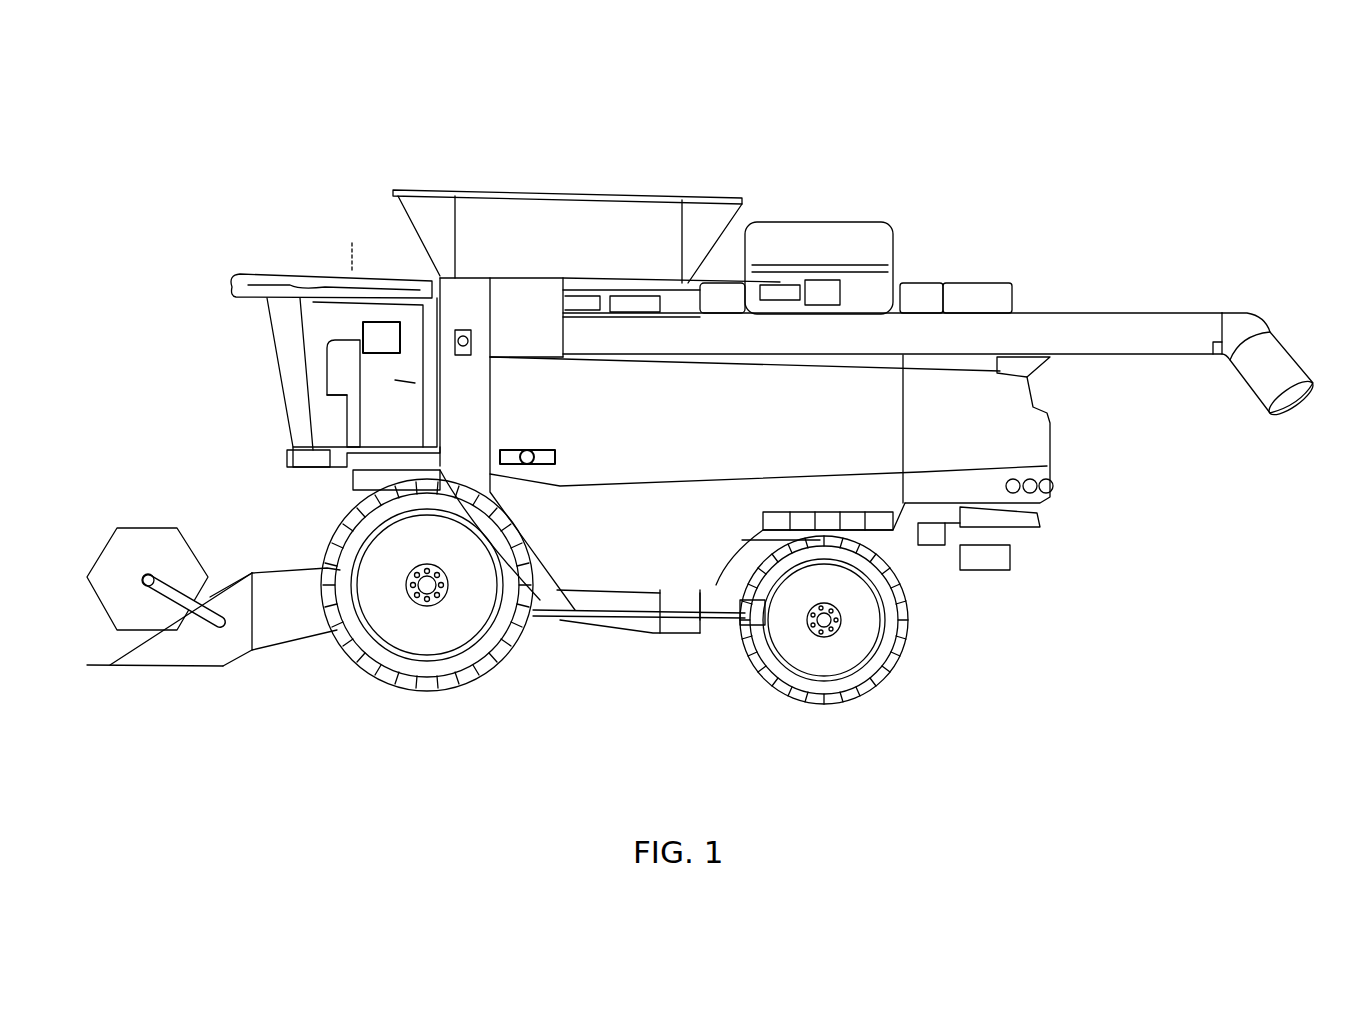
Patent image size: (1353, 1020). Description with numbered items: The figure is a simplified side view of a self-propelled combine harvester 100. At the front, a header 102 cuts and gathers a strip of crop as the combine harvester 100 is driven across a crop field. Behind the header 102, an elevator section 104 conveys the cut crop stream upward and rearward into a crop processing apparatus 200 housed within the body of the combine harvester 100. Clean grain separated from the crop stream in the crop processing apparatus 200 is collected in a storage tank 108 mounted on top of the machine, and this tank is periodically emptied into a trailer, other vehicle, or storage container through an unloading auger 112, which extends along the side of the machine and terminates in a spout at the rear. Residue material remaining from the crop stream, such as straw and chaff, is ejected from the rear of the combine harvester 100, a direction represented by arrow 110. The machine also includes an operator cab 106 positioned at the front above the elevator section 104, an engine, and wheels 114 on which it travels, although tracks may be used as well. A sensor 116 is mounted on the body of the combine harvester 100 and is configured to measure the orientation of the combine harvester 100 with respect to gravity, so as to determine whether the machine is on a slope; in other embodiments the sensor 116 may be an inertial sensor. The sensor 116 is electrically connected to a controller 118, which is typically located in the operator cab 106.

The combine harvester 100 is at (272, 190).
The header 102 is at (175, 672).
The elevator section 104 is at (296, 630).
The operator cab 106 is at (297, 415).
The storage tank 108 is at (636, 191).
The arrow 110 is at (1079, 580).
The unloading auger 112 is at (855, 342).
The wheels 114 is at (480, 683).
The sensor 116 is at (552, 462).
The controller 118 is at (392, 333).
The crop processing apparatus 200 is at (695, 550).